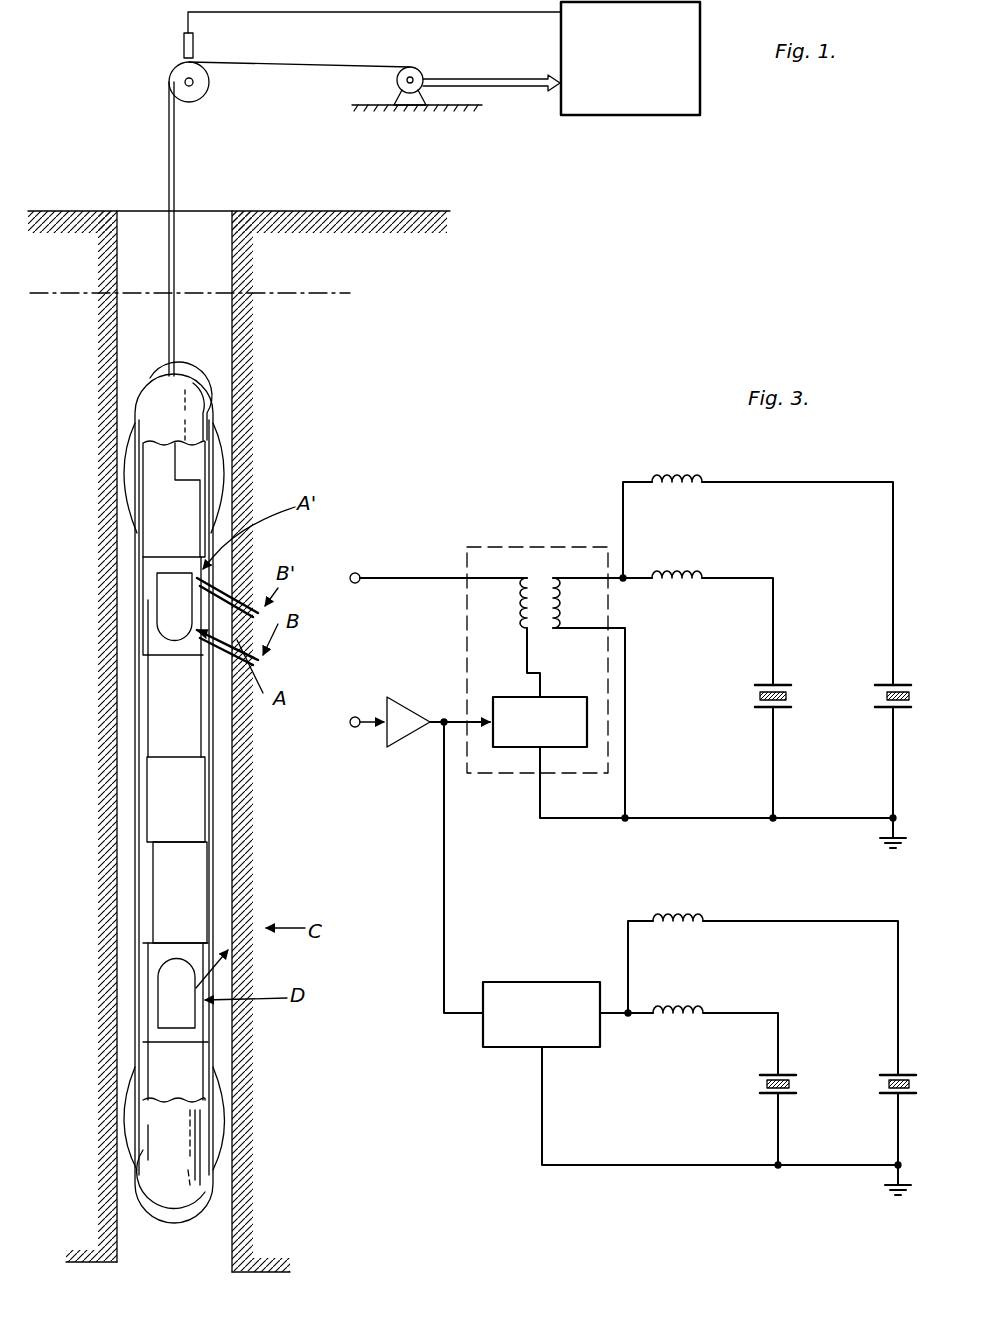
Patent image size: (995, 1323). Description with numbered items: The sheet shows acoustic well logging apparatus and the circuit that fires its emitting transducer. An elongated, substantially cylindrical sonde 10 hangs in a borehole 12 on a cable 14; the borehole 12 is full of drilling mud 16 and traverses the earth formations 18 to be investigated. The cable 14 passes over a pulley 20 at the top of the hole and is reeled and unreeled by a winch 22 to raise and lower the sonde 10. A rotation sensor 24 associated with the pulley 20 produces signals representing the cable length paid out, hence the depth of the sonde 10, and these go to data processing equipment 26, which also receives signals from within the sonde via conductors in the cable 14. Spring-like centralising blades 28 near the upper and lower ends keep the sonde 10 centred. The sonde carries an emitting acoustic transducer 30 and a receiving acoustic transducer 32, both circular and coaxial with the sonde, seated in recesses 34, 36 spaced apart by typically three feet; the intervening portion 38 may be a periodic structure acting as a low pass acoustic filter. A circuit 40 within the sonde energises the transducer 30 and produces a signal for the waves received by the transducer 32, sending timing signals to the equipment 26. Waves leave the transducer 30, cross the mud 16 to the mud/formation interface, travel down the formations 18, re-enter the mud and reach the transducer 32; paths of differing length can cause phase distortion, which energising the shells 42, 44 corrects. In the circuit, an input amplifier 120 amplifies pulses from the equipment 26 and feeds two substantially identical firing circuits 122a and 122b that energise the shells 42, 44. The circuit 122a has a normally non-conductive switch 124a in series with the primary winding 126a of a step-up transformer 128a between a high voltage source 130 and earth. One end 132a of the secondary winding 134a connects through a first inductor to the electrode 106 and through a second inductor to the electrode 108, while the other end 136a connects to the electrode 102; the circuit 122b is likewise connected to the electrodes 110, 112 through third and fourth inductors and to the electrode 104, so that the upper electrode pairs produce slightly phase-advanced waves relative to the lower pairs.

In FIG. 1, the support structure (sonde) 10 is at (175, 1222).
In FIG. 1, the borehole 12 is at (120, 988).
In FIG. 1, the cable 14 is at (170, 150).
In FIG. 1, the drilling mud 16 is at (128, 820).
In FIG. 1, the earth formations 18 is at (100, 866).
In FIG. 1, the pulley 20 is at (200, 97).
In FIG. 1, the winch 22 is at (400, 85).
In FIG. 1, the rotation sensor 24 is at (184, 40).
In FIG. 1, the data processing equipment 26 is at (630, 58).
In FIG. 3, the data processing equipment 26 is at (410, 783).
In FIG. 1, the centralising blades 28 is at (125, 448).
In FIG. 1, the emitting acoustic transducer 30 is at (168, 590).
In FIG. 1, the receiving acoustic transducer 32 is at (185, 1020).
In FIG. 1, the recess 34 is at (135, 565).
In FIG. 1, the recess 36 is at (162, 950).
In FIG. 1, the portion of the sonde 38 is at (180, 892).
In FIG. 1, the circuit 40 is at (176, 799).
In FIG. 3, the shell 42 is at (788, 697).
In FIG. 3, the shell 44 is at (790, 1084).
In FIG. 3, the electrode 102 is at (765, 645).
In FIG. 3, the electrode 104 is at (729, 1038).
In FIG. 3, the electrode 106 is at (762, 683).
In FIG. 3, the electrode 108 is at (884, 680).
In FIG. 3, the electrode 110 is at (782, 1070).
In FIG. 3, the electrode 112 is at (888, 1070).
In FIG. 3, the input amplifier 120 is at (400, 697).
In FIG. 3, the firing circuit 122a is at (507, 776).
In FIG. 3, the firing circuit 122b is at (507, 1050).
In FIG. 3, the switch 124a is at (587, 727).
In FIG. 3, the primary winding 126a is at (517, 595).
In FIG. 3, the step-up transformer 128a is at (522, 575).
In FIG. 3, the source of high voltage 130 is at (357, 586).
In FIG. 3, the end of secondary winding 132a is at (553, 575).
In FIG. 3, the secondary winding 134a is at (560, 612).
In FIG. 3, the end of secondary winding 136a is at (560, 632).